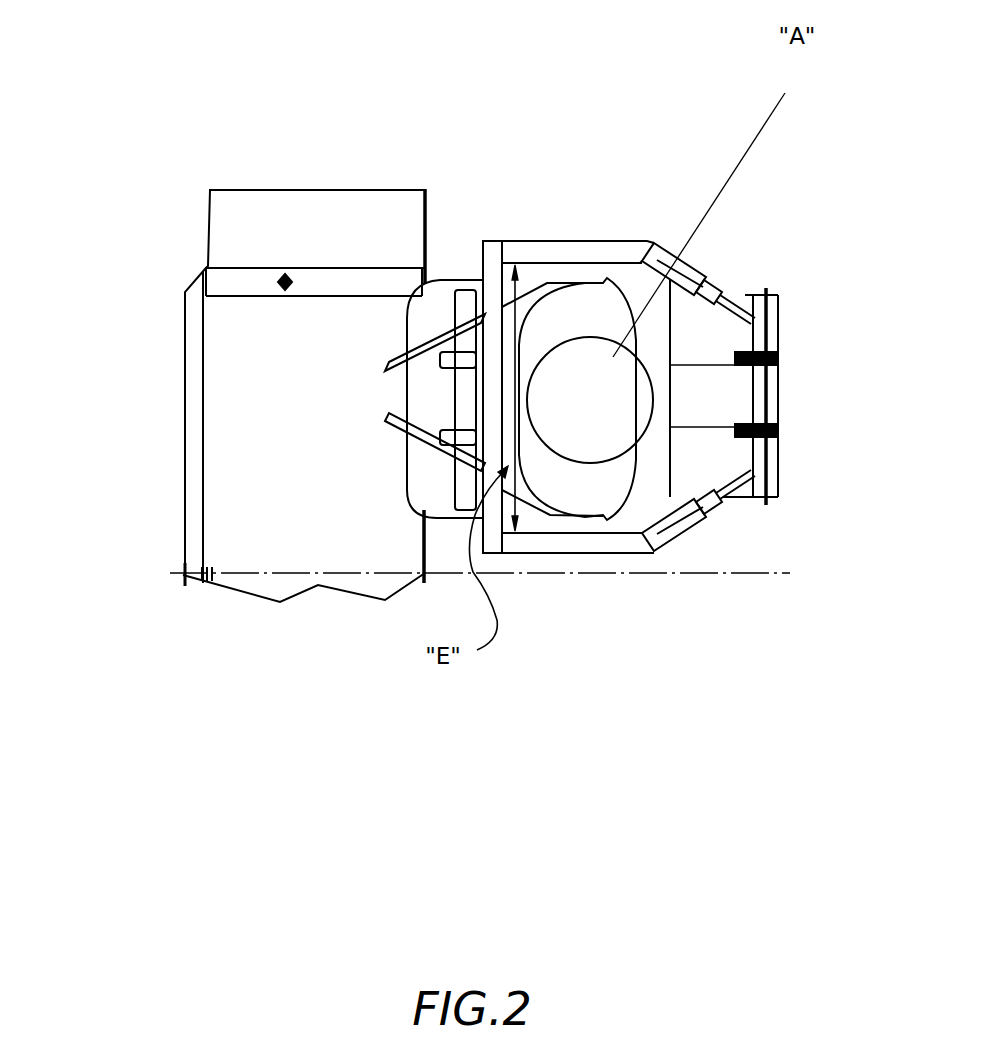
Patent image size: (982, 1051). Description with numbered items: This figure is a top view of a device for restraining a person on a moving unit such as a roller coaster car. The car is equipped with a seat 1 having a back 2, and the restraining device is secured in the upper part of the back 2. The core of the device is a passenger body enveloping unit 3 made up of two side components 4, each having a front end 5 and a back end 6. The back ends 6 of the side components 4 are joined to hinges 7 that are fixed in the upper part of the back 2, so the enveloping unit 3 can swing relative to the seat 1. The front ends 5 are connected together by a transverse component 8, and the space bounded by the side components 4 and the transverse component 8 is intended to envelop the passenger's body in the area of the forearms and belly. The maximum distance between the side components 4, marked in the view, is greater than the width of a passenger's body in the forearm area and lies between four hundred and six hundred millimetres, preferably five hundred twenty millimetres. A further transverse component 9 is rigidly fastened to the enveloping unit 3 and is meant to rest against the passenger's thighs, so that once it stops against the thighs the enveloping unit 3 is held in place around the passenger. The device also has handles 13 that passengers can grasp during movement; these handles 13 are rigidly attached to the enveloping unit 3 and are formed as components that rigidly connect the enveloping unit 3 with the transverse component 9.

The seat 1 is at (542, 288).
The back 2 is at (677, 410).
The enveloping unit 3 is at (622, 243).
The side components 4 is at (590, 250).
The front end 5 is at (542, 260).
The back end 6 is at (710, 292).
The hinges 7 is at (773, 425).
The transverse component 8 is at (495, 407).
The transverse component 9 is at (455, 288).
The handles 13 is at (452, 352).